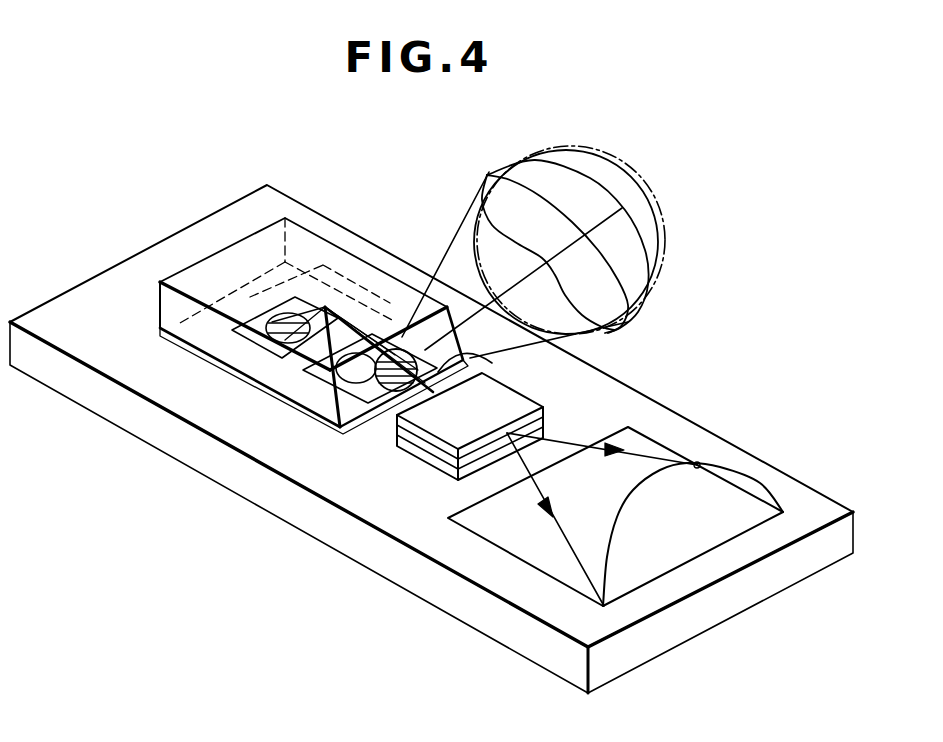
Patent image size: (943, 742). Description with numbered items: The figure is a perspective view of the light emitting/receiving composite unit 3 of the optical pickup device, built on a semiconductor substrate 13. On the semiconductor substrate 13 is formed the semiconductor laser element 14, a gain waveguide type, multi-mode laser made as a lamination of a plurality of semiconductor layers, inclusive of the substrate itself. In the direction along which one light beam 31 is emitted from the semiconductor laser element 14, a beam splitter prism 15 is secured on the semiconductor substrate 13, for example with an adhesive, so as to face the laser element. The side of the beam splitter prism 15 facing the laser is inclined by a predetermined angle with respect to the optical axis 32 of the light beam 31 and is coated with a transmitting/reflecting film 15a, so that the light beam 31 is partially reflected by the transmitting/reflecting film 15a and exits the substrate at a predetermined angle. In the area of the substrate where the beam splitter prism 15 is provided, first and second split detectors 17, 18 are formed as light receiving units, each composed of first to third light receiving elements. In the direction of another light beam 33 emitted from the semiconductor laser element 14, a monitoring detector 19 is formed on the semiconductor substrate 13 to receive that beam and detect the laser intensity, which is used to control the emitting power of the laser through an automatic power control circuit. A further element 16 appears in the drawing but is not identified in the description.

The light emitting/receiving composite unit 3 is at (718, 275).
The semiconductor substrate 13 is at (655, 643).
The semiconductor laser element 14 is at (430, 448).
The beam splitter prism 15 is at (225, 258).
The transmitting/reflecting film 15a is at (343, 405).
The plate 16 is at (160, 342).
The first split detector 17 is at (290, 402).
The second split detector 18 is at (230, 365).
The monitoring detector 19 is at (647, 438).
The light beam 31 is at (394, 403).
The optical axis 32 is at (495, 362).
The another light beam 33 is at (550, 440).